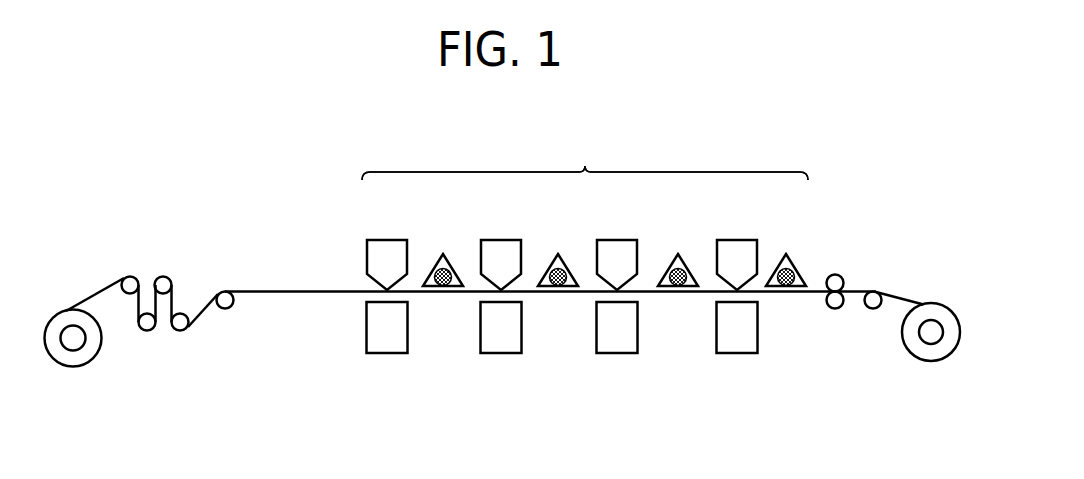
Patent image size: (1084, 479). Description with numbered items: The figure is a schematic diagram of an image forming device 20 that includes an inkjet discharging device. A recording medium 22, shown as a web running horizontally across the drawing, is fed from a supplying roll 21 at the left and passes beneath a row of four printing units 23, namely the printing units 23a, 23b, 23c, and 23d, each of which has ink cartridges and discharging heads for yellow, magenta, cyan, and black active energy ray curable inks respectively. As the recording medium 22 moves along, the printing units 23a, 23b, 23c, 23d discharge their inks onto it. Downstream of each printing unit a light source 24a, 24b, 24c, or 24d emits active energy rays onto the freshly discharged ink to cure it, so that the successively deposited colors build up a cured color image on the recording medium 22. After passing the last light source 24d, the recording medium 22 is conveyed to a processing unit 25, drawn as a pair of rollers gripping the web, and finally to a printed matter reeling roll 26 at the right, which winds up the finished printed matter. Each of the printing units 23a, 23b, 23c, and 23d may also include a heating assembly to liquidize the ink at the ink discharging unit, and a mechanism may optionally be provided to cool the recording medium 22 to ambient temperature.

The image forming device 20 is at (707, 137).
The supplying roll 21 is at (73, 342).
The recording medium 22 is at (273, 291).
The printing units 23 is at (585, 160).
The printing unit 23a is at (387, 248).
The printing unit 23b is at (501, 248).
The printing unit 23c is at (617, 248).
The printing unit 23d is at (737, 248).
The light source 24a is at (450, 265).
The light source 24b is at (565, 265).
The light source 24c is at (685, 265).
The light source 24d is at (793, 265).
The processing unit 25 is at (837, 268).
The printed matter reeling roll 26 is at (928, 338).